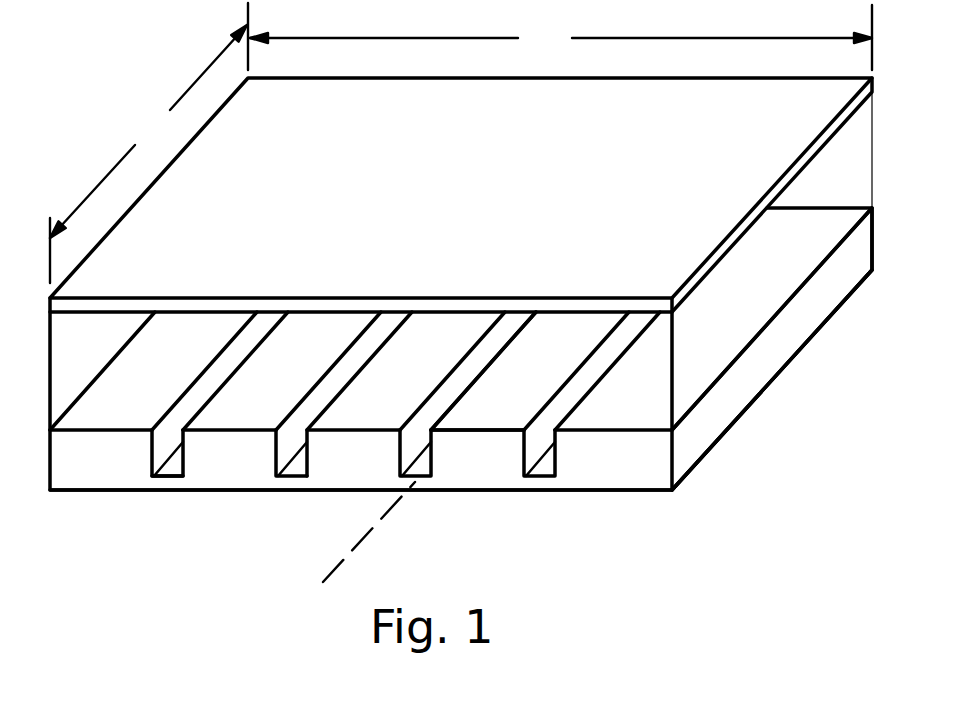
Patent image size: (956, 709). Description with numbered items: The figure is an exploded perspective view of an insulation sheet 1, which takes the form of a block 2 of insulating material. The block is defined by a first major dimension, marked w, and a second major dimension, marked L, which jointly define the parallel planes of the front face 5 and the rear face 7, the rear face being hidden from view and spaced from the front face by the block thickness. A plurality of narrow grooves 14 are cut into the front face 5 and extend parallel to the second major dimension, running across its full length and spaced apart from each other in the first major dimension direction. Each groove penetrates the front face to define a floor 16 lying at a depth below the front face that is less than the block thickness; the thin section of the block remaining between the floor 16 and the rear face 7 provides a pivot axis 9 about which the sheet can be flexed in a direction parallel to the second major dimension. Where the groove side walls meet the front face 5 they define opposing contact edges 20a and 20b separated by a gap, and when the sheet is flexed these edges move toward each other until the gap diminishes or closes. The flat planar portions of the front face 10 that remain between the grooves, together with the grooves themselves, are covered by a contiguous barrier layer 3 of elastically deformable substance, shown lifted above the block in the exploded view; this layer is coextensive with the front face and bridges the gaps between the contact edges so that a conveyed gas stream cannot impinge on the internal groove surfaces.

The insulation sheet 1 is at (101, 152).
The block 2 is at (743, 393).
The barrier layer 3 is at (740, 195).
The front face 5 is at (499, 413).
The rear face 7 is at (718, 445).
The pivot axis 9 is at (343, 560).
The flat planar portions of the front face 10 is at (792, 267).
The narrow grooves 14 is at (165, 428).
The floor 16 is at (172, 466).
The contact edge 20a is at (277, 418).
The contact edge 20b is at (330, 407).